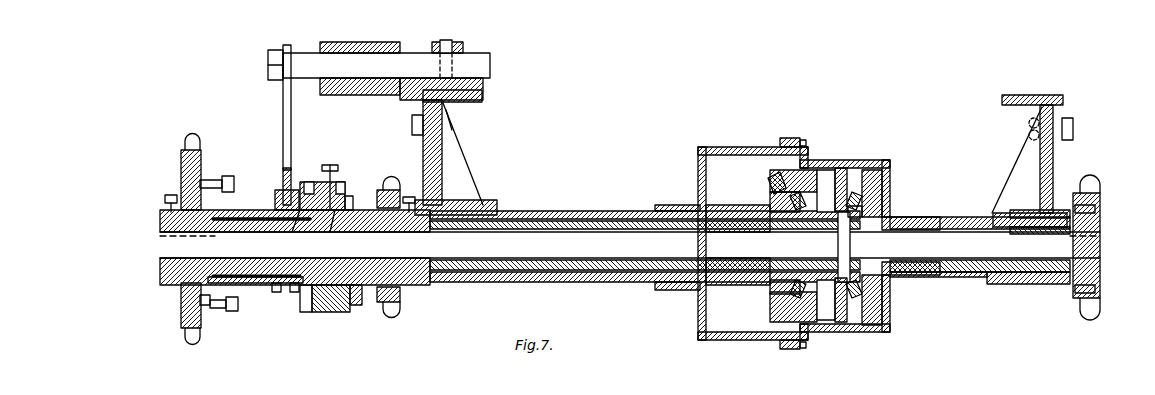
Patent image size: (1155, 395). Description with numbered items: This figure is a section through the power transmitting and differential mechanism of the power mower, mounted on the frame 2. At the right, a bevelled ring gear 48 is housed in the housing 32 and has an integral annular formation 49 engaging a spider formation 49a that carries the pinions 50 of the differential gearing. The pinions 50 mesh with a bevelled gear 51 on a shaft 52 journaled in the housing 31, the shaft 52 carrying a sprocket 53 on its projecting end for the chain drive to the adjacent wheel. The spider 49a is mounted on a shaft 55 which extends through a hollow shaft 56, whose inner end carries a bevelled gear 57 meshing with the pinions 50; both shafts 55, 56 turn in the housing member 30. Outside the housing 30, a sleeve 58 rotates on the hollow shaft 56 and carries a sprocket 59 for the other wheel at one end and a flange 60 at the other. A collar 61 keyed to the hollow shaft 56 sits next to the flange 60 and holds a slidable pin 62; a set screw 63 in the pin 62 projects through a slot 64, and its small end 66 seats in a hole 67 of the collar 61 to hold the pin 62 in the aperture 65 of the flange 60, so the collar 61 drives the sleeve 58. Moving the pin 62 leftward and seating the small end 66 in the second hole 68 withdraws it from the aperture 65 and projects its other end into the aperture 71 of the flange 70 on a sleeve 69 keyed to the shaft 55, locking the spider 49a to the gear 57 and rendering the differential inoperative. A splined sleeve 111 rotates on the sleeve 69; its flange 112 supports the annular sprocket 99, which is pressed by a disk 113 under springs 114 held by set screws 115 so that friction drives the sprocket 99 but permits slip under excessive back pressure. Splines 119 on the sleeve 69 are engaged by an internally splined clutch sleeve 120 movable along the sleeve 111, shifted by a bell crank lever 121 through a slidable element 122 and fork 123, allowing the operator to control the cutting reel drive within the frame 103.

The bracket 2 is at (468, 106).
The housing member 30 is at (548, 212).
The housing 31 is at (958, 217).
The housing 32 is at (704, 180).
The bevelled ring gear 48 is at (766, 180).
The annular formation 49 is at (836, 182).
The spider formation 49a is at (816, 226).
The pinions 50 is at (874, 186).
The bevelled gear 51 is at (862, 206).
The shaft 52 is at (956, 255).
The sprocket 53 is at (1100, 293).
The shaft 55 is at (578, 253).
The hollow shaft 56 is at (606, 222).
The bevelled gear 57 is at (790, 230).
The sleeve 58 is at (366, 210).
The sprocket 59 is at (392, 185).
The flange 60 is at (356, 305).
The collar 61 is at (330, 312).
The pin 62 is at (316, 182).
The set screw 63 is at (322, 184).
The slot 64 is at (330, 160).
The aperture 65 is at (344, 186).
The small end 66 is at (345, 212).
The hole 67 is at (330, 222).
The second hole 68 is at (300, 224).
The sleeve 69 is at (168, 217).
The flange 70 is at (304, 312).
The aperture 71 is at (295, 185).
The sprocket 99 is at (188, 150).
The frame 103 is at (578, 380).
The sleeve 111 is at (240, 308).
The flange 112 is at (181, 325).
The disk 113 is at (206, 306).
The springs 114 is at (212, 180).
The set screws 115 is at (234, 178).
The splines 119 is at (262, 226).
The internally splined sleeve 120 is at (258, 284).
The bell crank lever 121 is at (463, 44).
The slidable element 122 is at (412, 52).
The fork 123 is at (276, 100).